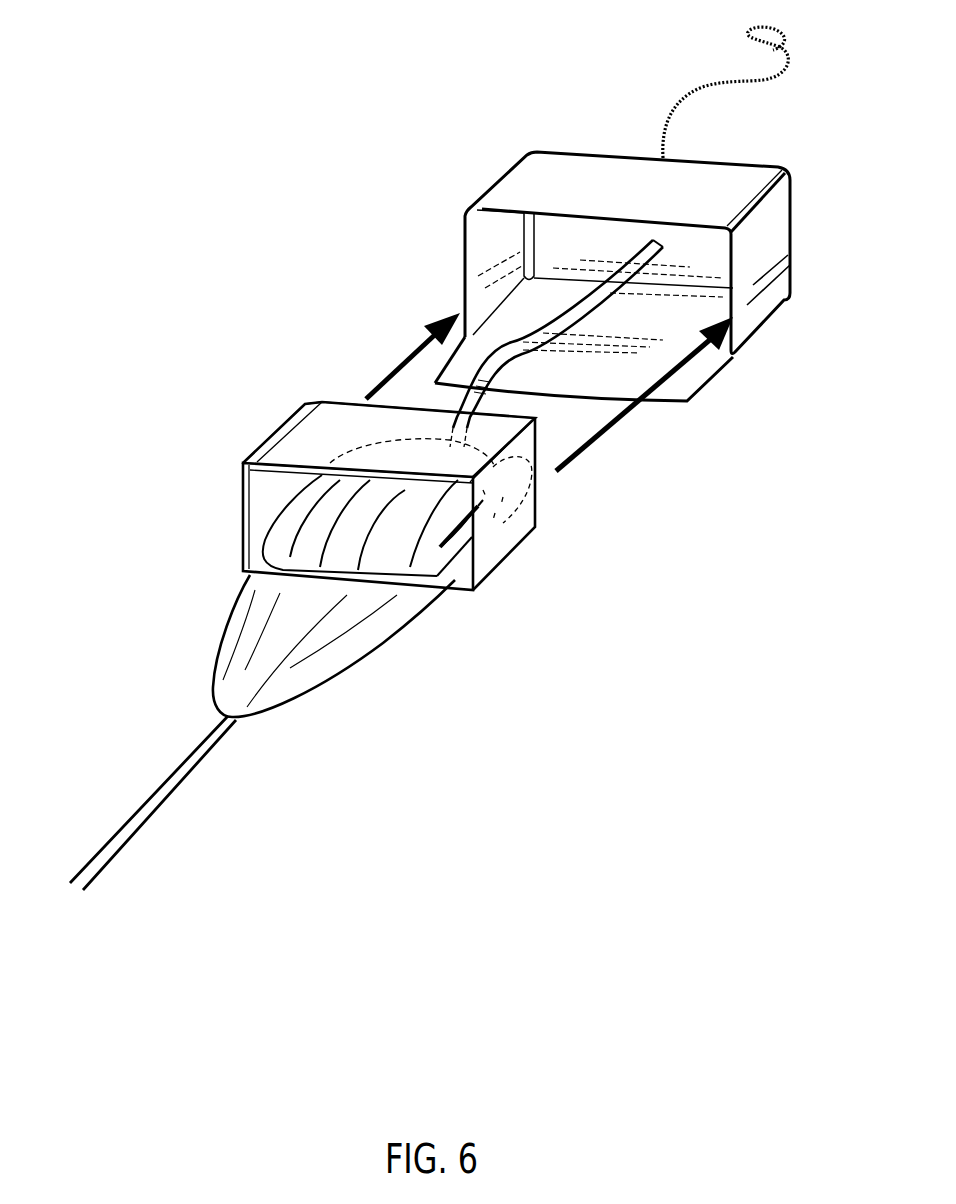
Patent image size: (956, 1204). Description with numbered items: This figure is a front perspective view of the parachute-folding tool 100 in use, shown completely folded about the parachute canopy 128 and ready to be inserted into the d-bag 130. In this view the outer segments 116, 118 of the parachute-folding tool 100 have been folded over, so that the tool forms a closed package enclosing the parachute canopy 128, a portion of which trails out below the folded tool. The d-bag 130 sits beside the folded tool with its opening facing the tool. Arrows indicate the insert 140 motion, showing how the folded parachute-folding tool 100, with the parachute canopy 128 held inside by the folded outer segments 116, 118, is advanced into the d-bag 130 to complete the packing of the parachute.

The parachute-folding tool 100 is at (200, 488).
The outer segment 116 is at (347, 423).
The outer segment 118 is at (272, 437).
The parachute canopy 128 is at (393, 553).
The d-bag 130 is at (567, 163).
The insert 140 is at (420, 330).